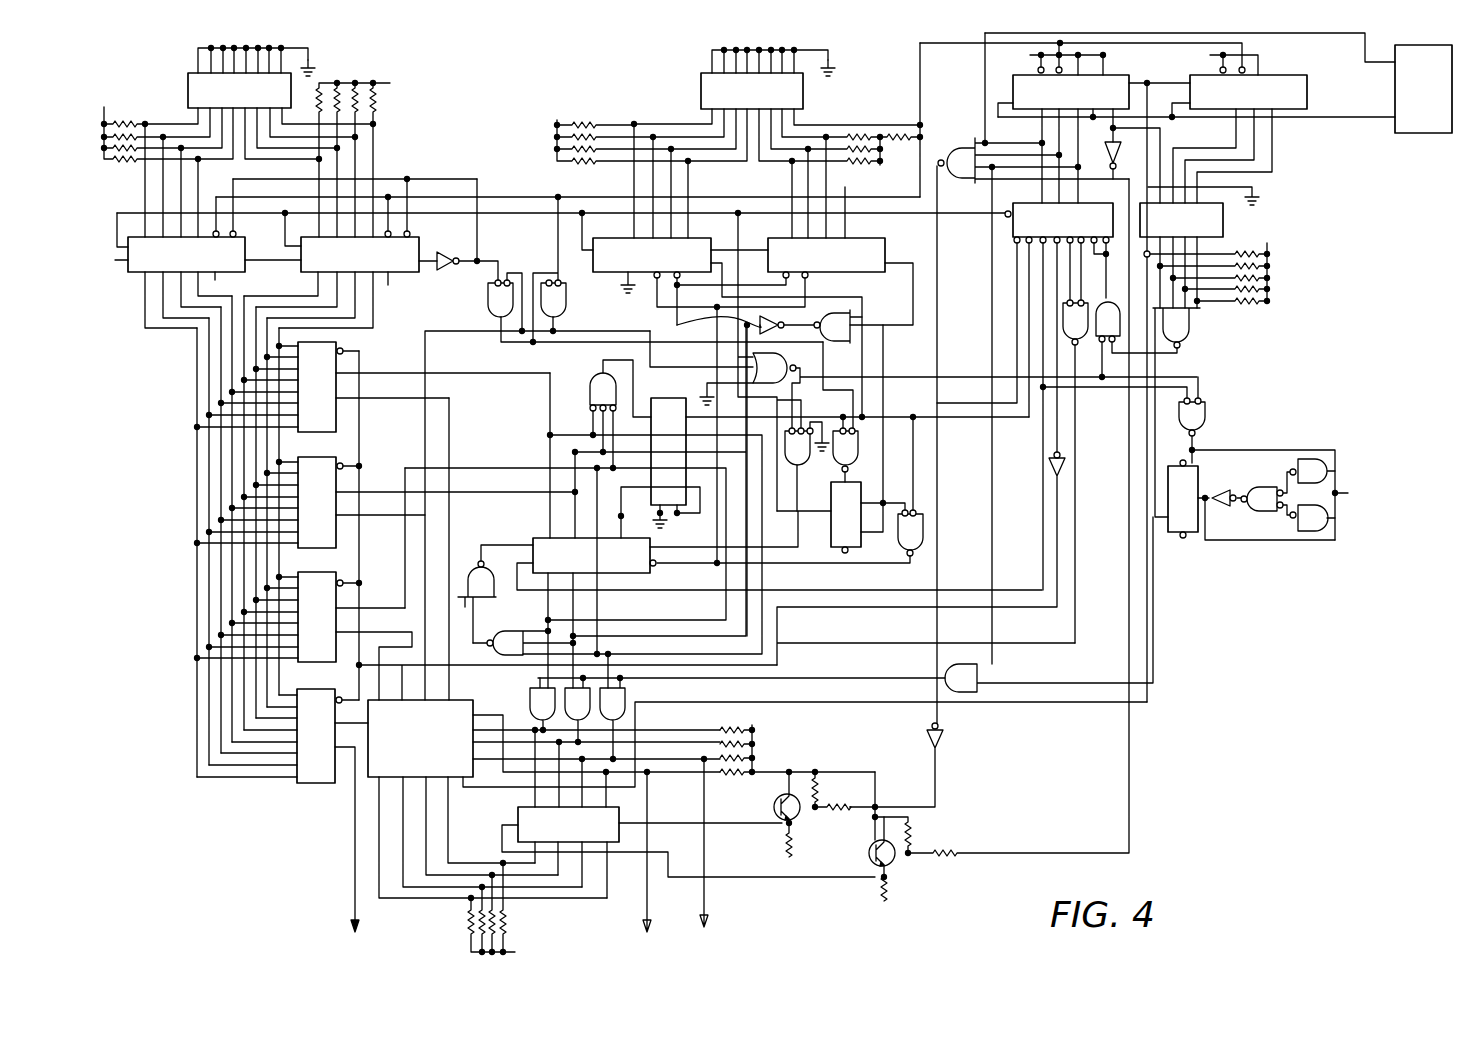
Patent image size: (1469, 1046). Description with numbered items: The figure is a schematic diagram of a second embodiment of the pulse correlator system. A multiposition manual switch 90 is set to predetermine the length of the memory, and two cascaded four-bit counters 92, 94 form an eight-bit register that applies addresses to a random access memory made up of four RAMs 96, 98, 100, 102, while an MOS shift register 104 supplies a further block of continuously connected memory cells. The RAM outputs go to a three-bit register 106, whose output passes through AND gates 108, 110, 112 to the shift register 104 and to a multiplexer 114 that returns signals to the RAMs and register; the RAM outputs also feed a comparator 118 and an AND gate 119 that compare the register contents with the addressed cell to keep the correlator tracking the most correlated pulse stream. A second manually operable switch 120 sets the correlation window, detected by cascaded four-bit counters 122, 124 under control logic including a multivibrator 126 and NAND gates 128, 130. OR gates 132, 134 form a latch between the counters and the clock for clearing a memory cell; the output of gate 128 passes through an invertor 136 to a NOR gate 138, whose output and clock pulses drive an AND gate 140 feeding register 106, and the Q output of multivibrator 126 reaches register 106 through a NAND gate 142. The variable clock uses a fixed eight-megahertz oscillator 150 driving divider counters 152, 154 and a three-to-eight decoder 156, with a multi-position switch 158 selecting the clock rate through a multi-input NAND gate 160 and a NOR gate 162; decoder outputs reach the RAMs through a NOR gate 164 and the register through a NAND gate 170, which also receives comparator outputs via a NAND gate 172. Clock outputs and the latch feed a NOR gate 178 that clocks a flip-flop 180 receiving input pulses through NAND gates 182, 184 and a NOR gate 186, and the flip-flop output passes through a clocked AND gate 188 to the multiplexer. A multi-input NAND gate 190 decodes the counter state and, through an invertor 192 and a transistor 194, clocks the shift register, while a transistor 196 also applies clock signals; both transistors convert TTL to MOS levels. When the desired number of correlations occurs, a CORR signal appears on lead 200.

The multiposition manual switch 90 is at (229, 103).
The 4-bit counter 92 is at (176, 263).
The 4-bit counter 94 is at (350, 263).
The RAM 96 is at (307, 383).
The RAM 98 is at (307, 499).
The RAM 100 is at (304, 613).
The RAM 102 is at (303, 731).
The MOS shift register 104 is at (555, 833).
The 3-bit register 106 is at (579, 565).
The AND gate 108 is at (532, 700).
The AND gate 110 is at (537, 685).
The AND gate 112 is at (623, 702).
The multiplexer 114 is at (407, 746).
The comparator 118 is at (656, 426).
The AND gate 119 is at (593, 370).
The multi-position manually operable switch 120 is at (739, 103).
The 4-bit counter 122 is at (639, 266).
The 4-bit counter 124 is at (813, 266).
The multivibrator 126 is at (835, 508).
The NAND gate 128 is at (850, 327).
The NAND gate 130 is at (866, 433).
The OR gate 132 is at (484, 302).
The OR gate 134 is at (565, 302).
The invertor 136 is at (725, 474).
The NOR gate 138 is at (796, 370).
The AND gate 140 is at (811, 466).
The NAND gate 142 is at (924, 528).
The 8 MHz oscillator 150 is at (1410, 123).
The counter 152 is at (1058, 103).
The counter 154 is at (1235, 103).
The 3-to-8 decoder 156 is at (1050, 229).
The multi-position switch 158 is at (1168, 229).
The multi-input NAND gate 160 is at (1188, 321).
The NOR gate 162 is at (1132, 358).
The NOR gate 164 is at (1081, 372).
The NAND gate 170 is at (470, 560).
The NAND gate 172 is at (512, 620).
The NOR gate 178 is at (1202, 415).
The flip-flop 180 is at (1172, 493).
The NAND gate 182 is at (1320, 462).
The NAND gate 184 is at (1322, 532).
The NOR gate 186 is at (1254, 488).
The AND gate 188 is at (978, 674).
The multi-input NAND gate 190 is at (962, 151).
The invertor 192 is at (938, 740).
The transistor 194 is at (774, 804).
The transistor 196 is at (868, 854).
The lead 200 is at (706, 893).